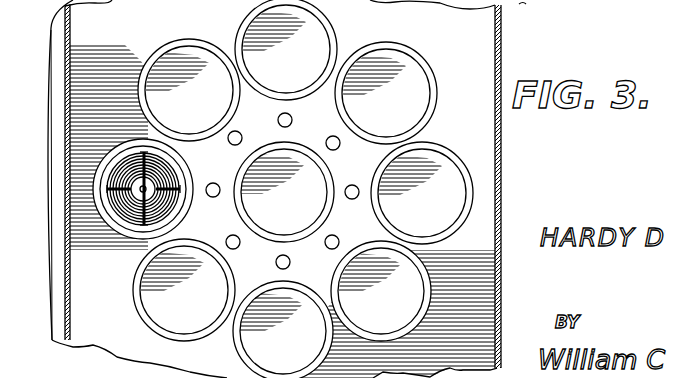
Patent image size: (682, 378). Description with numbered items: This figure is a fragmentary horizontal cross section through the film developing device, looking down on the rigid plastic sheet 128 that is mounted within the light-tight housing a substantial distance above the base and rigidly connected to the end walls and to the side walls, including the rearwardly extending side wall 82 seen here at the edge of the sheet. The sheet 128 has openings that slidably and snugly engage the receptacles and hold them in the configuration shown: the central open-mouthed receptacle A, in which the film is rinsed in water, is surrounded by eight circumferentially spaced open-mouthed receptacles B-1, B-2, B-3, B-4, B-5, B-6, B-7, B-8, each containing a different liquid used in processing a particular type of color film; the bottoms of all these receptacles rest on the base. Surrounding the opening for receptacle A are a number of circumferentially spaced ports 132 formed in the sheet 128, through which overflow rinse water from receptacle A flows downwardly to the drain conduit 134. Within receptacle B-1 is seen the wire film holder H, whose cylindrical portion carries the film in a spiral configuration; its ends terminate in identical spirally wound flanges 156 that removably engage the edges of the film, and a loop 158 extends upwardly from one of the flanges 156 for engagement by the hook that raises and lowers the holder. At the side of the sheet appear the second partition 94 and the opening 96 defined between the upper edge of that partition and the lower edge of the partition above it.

The sheet 128 is at (461, 39).
The open-mouthed receptacle B-1 is at (115, 238).
The open-mouthed receptacle B-2 is at (147, 328).
The open-mouthed receptacle B-3 is at (237, 357).
The open-mouthed receptacle B-4 is at (430, 283).
The open-mouthed receptacle B-5 is at (452, 154).
The open-mouthed receptacle B-6 is at (457, 77).
The open-mouthed receptacle B-7 is at (333, 30).
The open-mouthed receptacle B-8 is at (189, 39).
The open-mouthed receptacle A is at (325, 165).
The ports 132 is at (333, 137).
The flanges 156 is at (176, 172).
The loop 158 is at (157, 217).
The film holder H is at (173, 208).
The rearwardly extending side wall 82 is at (502, 200).
The second partition 94 is at (67, 322).
The opening 96 is at (67, 308).
The drain conduit 134 is at (583, 4).